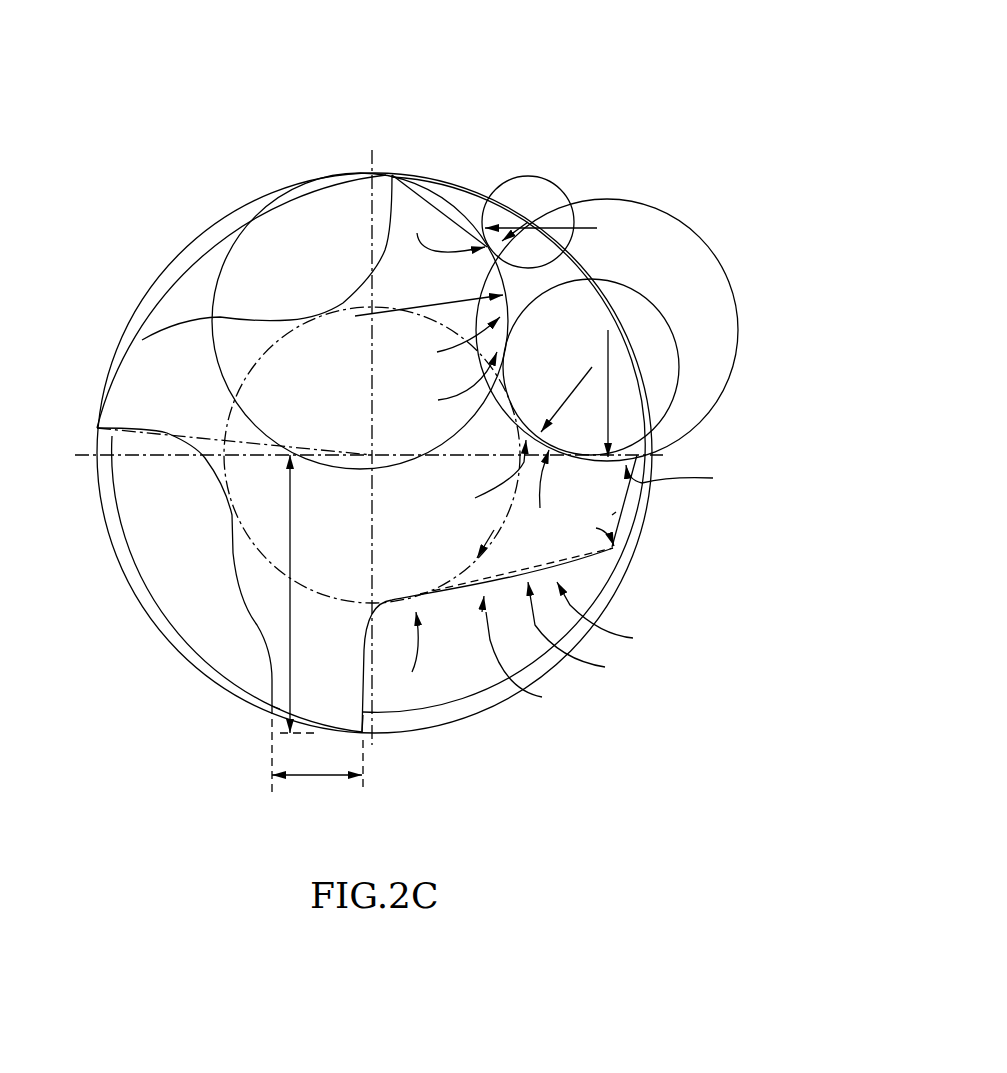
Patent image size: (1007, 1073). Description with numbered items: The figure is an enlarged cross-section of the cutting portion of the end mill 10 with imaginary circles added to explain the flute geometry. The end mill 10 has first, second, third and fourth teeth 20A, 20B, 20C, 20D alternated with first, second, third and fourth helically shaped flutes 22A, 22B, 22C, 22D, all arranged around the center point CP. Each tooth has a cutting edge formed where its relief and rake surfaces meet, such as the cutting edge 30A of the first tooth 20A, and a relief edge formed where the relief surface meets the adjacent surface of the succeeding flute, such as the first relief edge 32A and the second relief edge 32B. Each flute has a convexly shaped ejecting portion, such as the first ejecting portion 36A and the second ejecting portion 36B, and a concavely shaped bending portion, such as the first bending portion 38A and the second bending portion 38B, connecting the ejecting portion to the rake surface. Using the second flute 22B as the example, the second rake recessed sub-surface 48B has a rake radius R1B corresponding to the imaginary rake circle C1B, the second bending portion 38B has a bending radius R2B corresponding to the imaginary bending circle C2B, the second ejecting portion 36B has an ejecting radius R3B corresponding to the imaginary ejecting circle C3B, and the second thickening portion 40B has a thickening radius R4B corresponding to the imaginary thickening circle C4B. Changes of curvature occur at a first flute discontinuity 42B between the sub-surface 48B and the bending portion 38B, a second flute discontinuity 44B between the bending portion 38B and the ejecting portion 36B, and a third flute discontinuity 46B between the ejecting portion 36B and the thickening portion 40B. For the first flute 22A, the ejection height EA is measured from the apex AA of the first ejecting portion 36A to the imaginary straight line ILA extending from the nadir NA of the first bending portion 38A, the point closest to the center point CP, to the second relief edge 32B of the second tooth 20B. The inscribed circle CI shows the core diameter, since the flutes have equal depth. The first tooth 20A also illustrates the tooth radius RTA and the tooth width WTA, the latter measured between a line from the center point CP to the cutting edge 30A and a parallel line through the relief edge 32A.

The end mill 10 is at (553, 62).
The first tooth 20A is at (272, 677).
The second tooth 20B is at (618, 505).
The third tooth 20C is at (394, 176).
The fourth tooth 20D is at (135, 385).
The first flute 22A is at (508, 730).
The second flute 22B is at (614, 170).
The third flute 22C is at (180, 220).
The fourth flute 22D is at (104, 585).
The cutting edge 30A is at (366, 735).
The first relief edge 32A is at (280, 706).
The second relief edge 32B is at (612, 515).
The first ejecting portion 36A is at (619, 618).
The second ejecting portion 36B is at (451, 350).
The first bending portion 38A is at (400, 658).
The second bending portion 38B is at (483, 485).
The second thickening portion 40B is at (567, 231).
The first flute discontinuity 42B is at (531, 495).
The second flute discontinuity 44B is at (445, 387).
The third flute discontinuity 46B is at (440, 229).
The second rake recessed sub-surface 48B is at (694, 479).
The imaginary rake circle C1B is at (738, 345).
The imaginary bending circle C2B is at (680, 360).
The imaginary ejecting circle C3B is at (318, 173).
The imaginary thickening circle C4B is at (510, 177).
The rake radius R1B is at (610, 332).
The bending radius R2B is at (580, 372).
The ejecting radius R3B is at (460, 298).
The thickening radius R4B is at (527, 222).
The center point CP is at (360, 447).
The inscribed circle CI is at (248, 532).
The tooth radius RTA is at (293, 533).
The tooth width WTA is at (312, 777).
The nadir NA is at (422, 598).
The ejection height EA is at (529, 671).
The apex AA is at (581, 641).
The imaginary straight line ILA is at (545, 540).